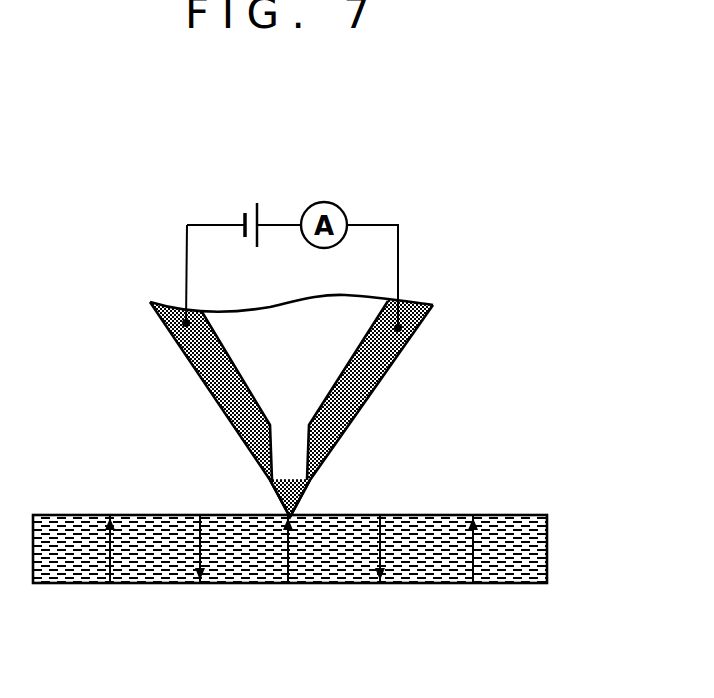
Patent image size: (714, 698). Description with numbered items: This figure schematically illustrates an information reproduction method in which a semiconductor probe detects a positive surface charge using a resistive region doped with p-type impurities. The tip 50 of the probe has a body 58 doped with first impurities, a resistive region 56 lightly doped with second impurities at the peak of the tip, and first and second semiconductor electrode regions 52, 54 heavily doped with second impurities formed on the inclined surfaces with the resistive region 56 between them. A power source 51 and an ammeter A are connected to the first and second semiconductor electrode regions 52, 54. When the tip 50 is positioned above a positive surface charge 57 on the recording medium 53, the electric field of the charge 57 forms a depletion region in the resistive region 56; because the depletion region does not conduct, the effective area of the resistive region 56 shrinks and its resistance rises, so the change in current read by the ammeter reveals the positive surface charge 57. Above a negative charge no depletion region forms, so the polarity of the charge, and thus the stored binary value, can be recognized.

The tip 50 is at (128, 332).
The power source 51 is at (253, 205).
The first semiconductor electrode region 52 is at (200, 376).
The recording medium 53 is at (540, 566).
The second semiconductor electrode region 54 is at (375, 378).
The resistive region 56 is at (272, 505).
The positive surface charge 57 is at (295, 548).
The body 58 is at (278, 322).